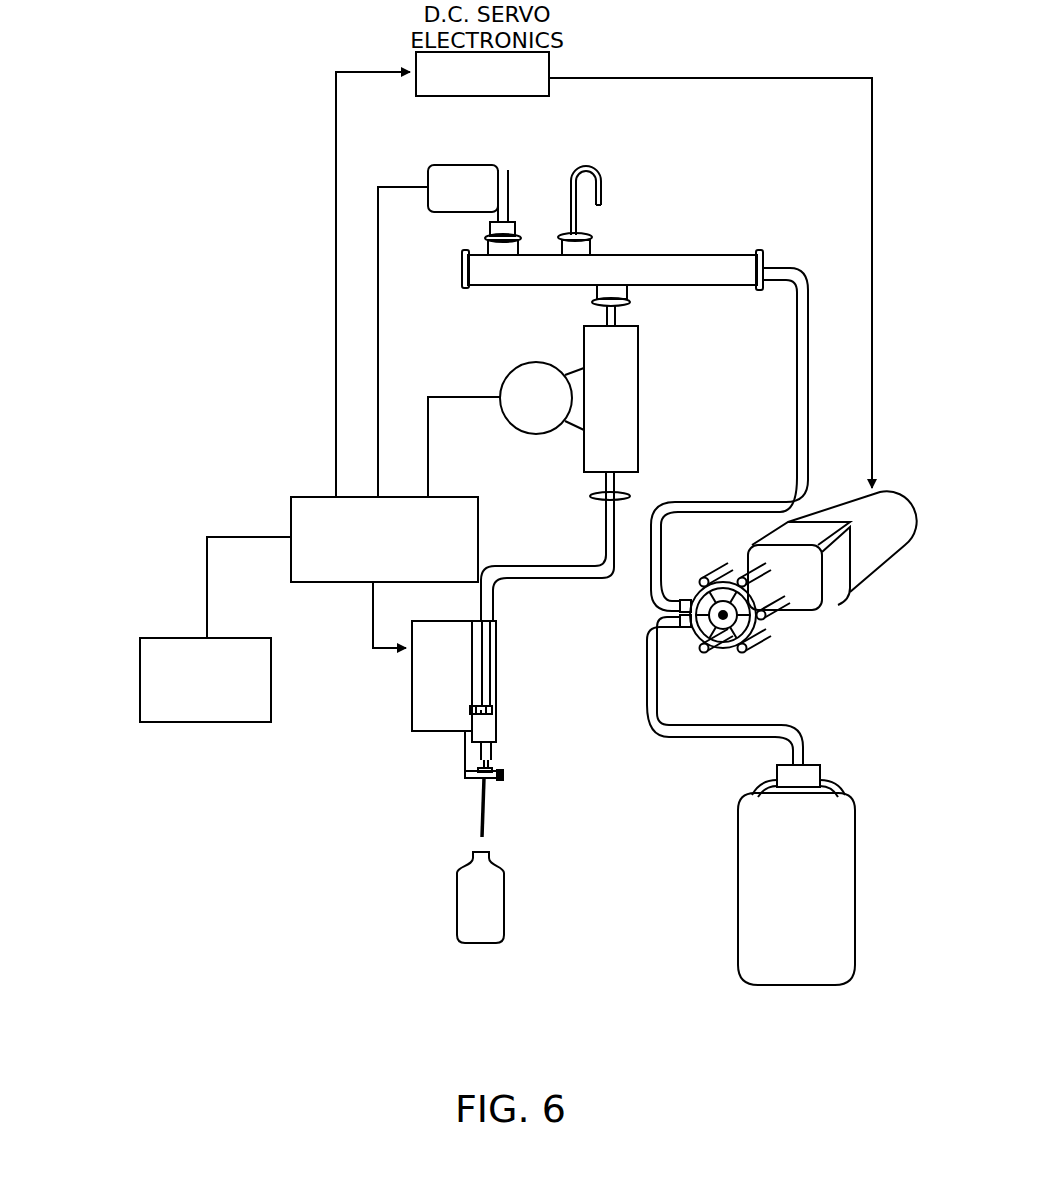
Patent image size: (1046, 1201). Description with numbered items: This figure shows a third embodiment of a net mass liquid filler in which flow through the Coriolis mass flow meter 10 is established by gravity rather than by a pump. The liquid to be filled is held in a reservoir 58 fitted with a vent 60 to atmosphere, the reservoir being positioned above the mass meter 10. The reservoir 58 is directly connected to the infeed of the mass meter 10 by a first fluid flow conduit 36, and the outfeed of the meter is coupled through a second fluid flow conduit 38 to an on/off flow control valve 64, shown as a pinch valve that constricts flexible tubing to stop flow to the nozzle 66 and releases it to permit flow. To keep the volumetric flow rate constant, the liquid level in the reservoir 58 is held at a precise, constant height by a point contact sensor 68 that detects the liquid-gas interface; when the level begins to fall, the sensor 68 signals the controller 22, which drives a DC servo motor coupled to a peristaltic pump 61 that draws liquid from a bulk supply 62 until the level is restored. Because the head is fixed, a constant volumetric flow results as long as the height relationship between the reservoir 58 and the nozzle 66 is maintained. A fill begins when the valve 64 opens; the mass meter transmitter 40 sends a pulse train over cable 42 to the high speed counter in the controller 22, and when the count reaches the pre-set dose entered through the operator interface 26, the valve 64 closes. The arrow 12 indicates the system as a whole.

The Coriolis mass flow meter 10 is at (630, 383).
The sample processing system 12 is at (142, 781).
The electronic filler controller 22 is at (318, 515).
The operator interface 26 is at (217, 708).
The first fluid flow conduit 36 is at (620, 320).
The second fluid flow conduit 38 is at (535, 577).
The mass meter transmitter 40 is at (530, 385).
The cable 42 is at (478, 394).
The reservoir 58 is at (682, 256).
The vent 60 is at (598, 176).
The pump 61 is at (762, 627).
The bulk supply 62 is at (827, 837).
The flow control valve 64 is at (465, 773).
The nozzle 66 is at (486, 812).
The point contact sensor 68 is at (488, 228).